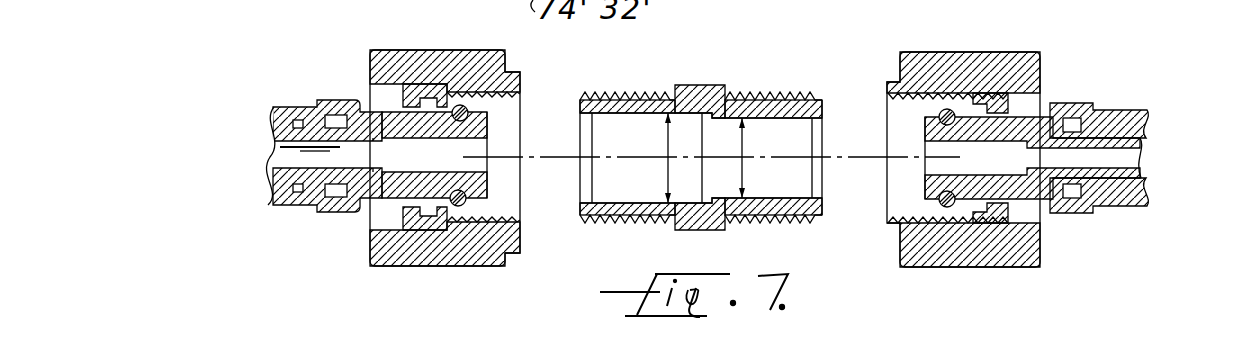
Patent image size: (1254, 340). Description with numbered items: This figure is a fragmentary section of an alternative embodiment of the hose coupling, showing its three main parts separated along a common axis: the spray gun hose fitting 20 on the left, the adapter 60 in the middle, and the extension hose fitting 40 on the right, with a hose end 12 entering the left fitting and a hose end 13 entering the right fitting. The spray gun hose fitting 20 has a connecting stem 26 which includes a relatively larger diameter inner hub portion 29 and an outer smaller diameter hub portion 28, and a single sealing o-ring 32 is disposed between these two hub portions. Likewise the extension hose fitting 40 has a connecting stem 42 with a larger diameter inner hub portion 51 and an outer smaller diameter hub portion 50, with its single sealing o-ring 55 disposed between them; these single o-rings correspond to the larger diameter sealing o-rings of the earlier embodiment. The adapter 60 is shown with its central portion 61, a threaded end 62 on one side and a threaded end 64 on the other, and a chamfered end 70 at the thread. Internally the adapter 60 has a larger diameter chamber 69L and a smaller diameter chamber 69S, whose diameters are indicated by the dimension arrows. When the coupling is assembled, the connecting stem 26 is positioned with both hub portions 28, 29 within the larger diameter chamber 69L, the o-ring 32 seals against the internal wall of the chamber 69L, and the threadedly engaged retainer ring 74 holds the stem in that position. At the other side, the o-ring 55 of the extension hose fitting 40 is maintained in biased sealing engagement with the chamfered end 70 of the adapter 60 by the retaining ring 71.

The tube fitting (left) 12 is at (273, 127).
The spray gun hose fitting 20 is at (372, 100).
The connecting stem 26 is at (397, 193).
The outer smaller diameter hub portion 28 is at (483, 222).
The inner hub portion 29 is at (452, 206).
The sealing o-ring 32 is at (460, 105).
The retainer ring 74 is at (377, 253).
The adapter 60 is at (716, 141).
The hex body of nipple 61 is at (693, 85).
The left threaded end of nipple 62 is at (617, 93).
The right threaded end of nipple 64 is at (780, 93).
The chamfered end 70 is at (823, 117).
The larger diameter chamber 69L is at (666, 171).
The small bore diameter 69S is at (742, 164).
The extension hose fitting 40 is at (1047, 95).
The retaining ring 71 is at (1017, 60).
The outer smaller diameter hub portion 50 is at (917, 230).
The inner hub portion 51 is at (970, 208).
The connecting stem 42 is at (1023, 197).
The sealing o-ring 55 is at (947, 108).
The tube fitting (right) 13 is at (1140, 182).